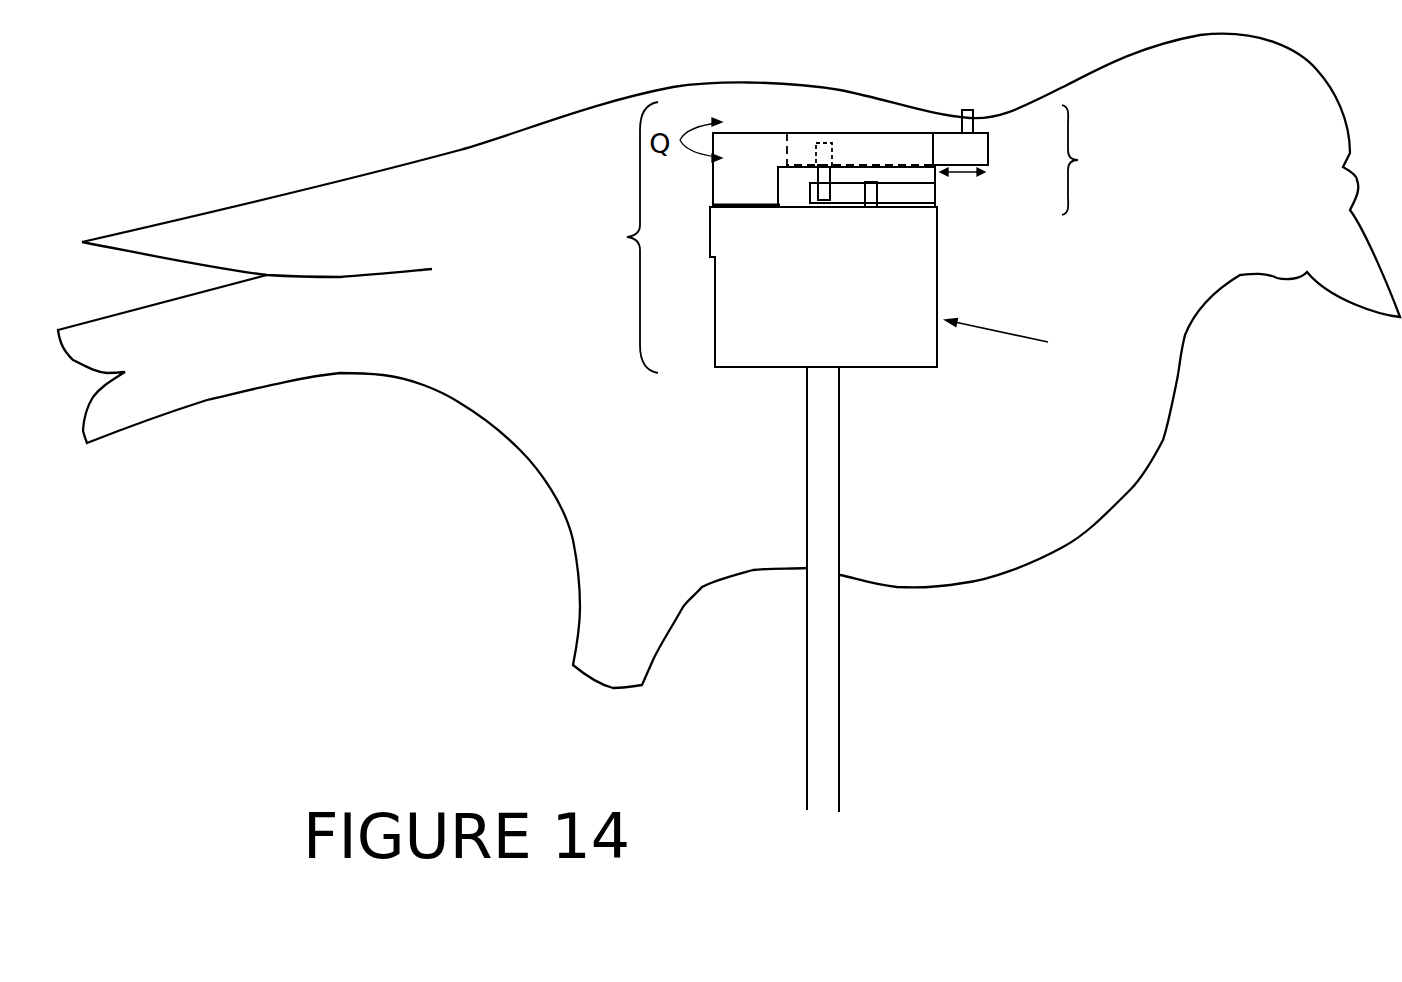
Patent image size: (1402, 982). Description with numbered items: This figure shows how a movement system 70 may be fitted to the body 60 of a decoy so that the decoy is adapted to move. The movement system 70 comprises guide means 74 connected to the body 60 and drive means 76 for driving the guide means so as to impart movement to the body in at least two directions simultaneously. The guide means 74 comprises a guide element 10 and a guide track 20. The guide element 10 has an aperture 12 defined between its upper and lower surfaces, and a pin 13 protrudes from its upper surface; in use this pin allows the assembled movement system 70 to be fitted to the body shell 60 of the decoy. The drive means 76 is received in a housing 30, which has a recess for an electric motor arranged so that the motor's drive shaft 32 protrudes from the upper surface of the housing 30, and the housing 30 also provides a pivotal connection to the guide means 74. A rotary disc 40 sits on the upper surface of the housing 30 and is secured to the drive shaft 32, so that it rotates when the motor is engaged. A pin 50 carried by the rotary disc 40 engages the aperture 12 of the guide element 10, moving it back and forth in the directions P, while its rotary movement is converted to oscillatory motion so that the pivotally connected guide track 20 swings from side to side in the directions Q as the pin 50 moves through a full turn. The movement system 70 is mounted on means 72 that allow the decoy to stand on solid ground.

The guide element 10 is at (988, 150).
The aperture 12 is at (823, 132).
The pin 13 is at (967, 110).
The guide track 20 is at (730, 198).
The housing 30 is at (808, 305).
The drive shaft 32 is at (868, 200).
The rotary disc 40 is at (935, 195).
The pin 50 is at (820, 177).
The body 60 is at (573, 107).
The movement system 70 is at (619, 237).
The mounting means 72 is at (817, 702).
The guide means 74 is at (1088, 160).
The drive means 76 is at (1018, 340).